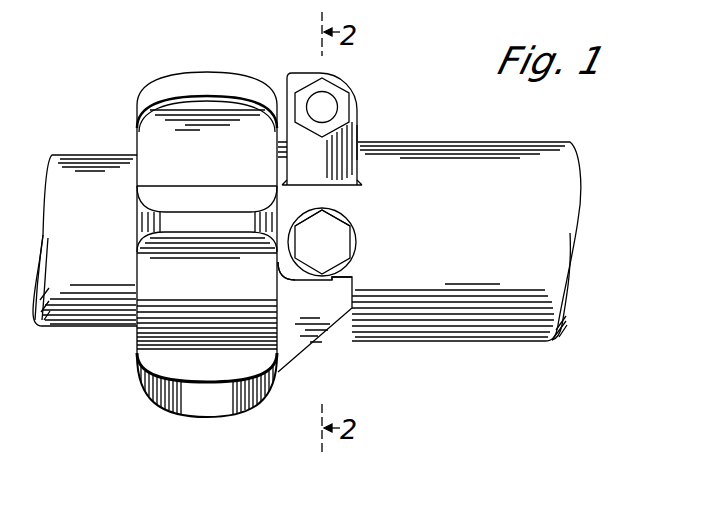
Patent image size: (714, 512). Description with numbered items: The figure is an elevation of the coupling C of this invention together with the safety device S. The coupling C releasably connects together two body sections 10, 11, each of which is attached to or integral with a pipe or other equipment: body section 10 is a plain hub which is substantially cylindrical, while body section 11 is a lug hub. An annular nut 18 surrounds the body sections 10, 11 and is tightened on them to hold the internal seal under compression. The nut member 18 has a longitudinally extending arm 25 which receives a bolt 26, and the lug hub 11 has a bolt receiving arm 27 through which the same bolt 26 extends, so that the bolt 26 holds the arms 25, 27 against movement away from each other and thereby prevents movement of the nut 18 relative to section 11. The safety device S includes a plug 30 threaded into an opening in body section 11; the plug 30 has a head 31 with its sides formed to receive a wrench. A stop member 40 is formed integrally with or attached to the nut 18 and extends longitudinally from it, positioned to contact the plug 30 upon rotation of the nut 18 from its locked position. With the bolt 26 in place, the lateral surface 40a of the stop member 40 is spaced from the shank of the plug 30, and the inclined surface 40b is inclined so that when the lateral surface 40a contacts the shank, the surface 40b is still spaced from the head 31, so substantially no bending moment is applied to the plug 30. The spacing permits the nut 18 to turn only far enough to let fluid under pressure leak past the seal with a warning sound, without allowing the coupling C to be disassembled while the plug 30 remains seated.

The body section 10 is at (73, 327).
The body section 11 is at (490, 343).
The annular nut 18 is at (137, 258).
The longitudinally extending arm 25 is at (280, 78).
The bolt 26 is at (328, 107).
The bolt receiving arm 27 is at (356, 129).
The plug 30 is at (338, 212).
The head 31 is at (340, 247).
The stop member 40 is at (345, 297).
The lateral surface 40a is at (345, 272).
The inclined surface 40b is at (337, 281).
The safety device S is at (352, 228).
The coupling C is at (178, 418).